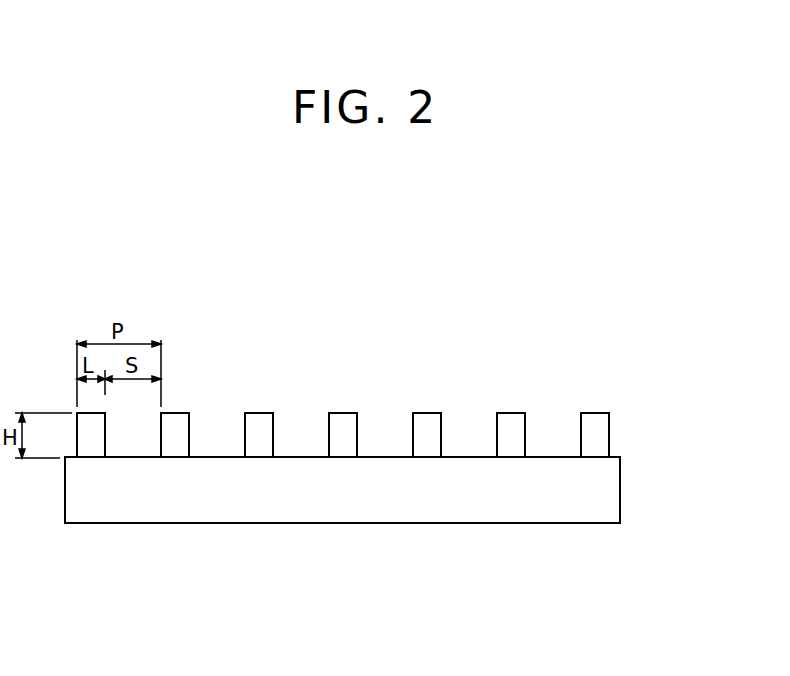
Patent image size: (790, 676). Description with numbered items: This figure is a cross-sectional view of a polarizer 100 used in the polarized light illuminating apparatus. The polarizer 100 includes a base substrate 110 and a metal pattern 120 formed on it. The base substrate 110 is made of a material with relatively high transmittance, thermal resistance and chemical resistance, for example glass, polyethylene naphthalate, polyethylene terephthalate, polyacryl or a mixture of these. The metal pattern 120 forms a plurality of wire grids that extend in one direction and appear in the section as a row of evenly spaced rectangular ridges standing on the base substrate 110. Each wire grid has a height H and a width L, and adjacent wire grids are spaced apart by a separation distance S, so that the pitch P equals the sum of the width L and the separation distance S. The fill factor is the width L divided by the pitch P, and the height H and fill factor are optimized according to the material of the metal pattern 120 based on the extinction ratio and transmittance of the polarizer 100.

The polarizer 100 is at (395, 328).
The base substrate 110 is at (612, 487).
The metal pattern 120 is at (599, 432).